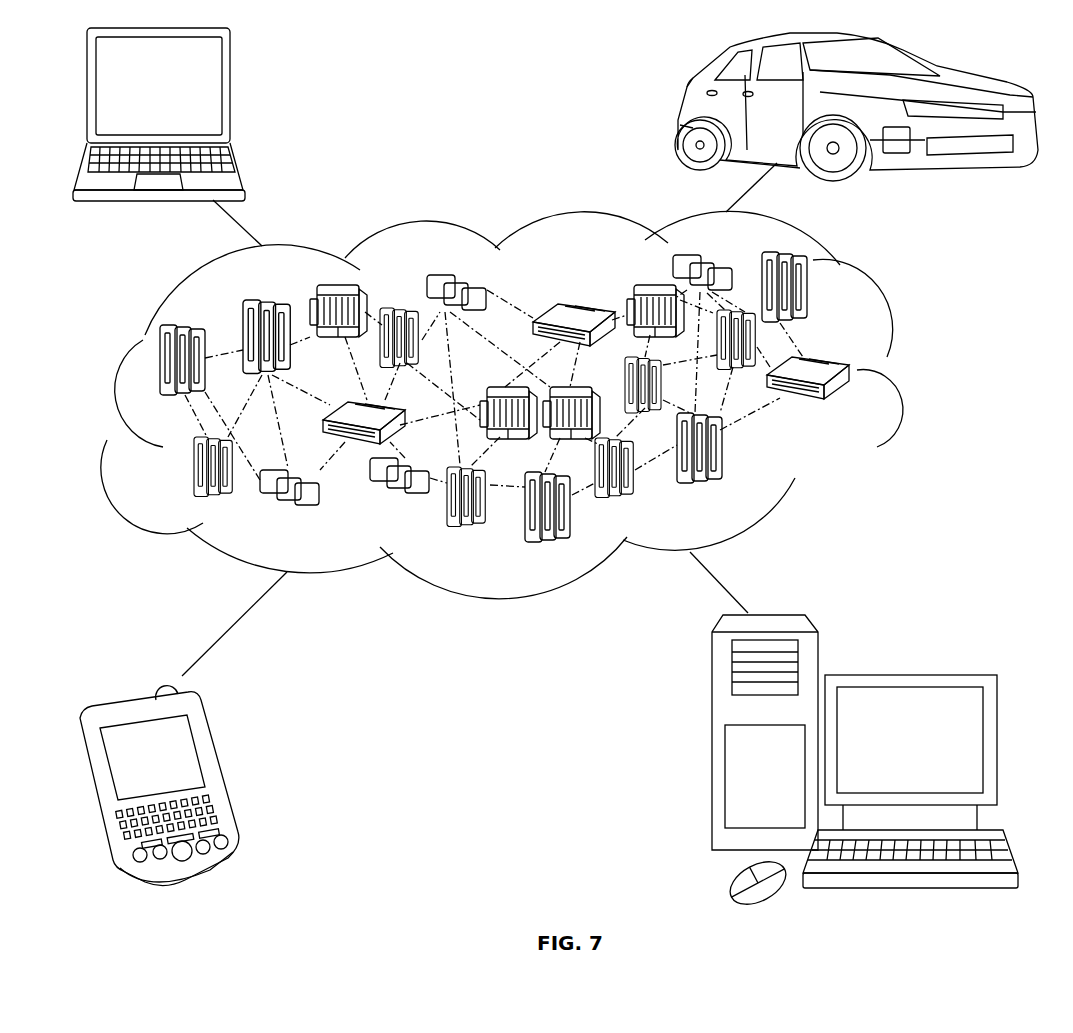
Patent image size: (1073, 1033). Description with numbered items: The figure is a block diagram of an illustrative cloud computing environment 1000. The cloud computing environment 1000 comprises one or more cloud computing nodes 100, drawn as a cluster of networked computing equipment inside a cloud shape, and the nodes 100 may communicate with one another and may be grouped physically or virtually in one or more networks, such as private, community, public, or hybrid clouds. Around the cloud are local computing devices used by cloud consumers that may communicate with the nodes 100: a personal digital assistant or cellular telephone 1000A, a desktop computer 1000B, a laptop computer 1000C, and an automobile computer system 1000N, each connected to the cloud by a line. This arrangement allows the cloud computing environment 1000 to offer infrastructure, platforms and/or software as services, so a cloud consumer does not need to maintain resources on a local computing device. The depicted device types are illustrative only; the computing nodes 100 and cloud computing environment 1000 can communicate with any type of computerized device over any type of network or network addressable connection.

The cloud computing environment 1000 is at (906, 376).
The cloud computing nodes 100 is at (858, 408).
The personal digital assistant (PDA) or cellular telephone 1000A is at (220, 772).
The desktop computer 1000B is at (906, 675).
The laptop computer 1000C is at (231, 96).
The automobile computer system 1000N is at (681, 113).